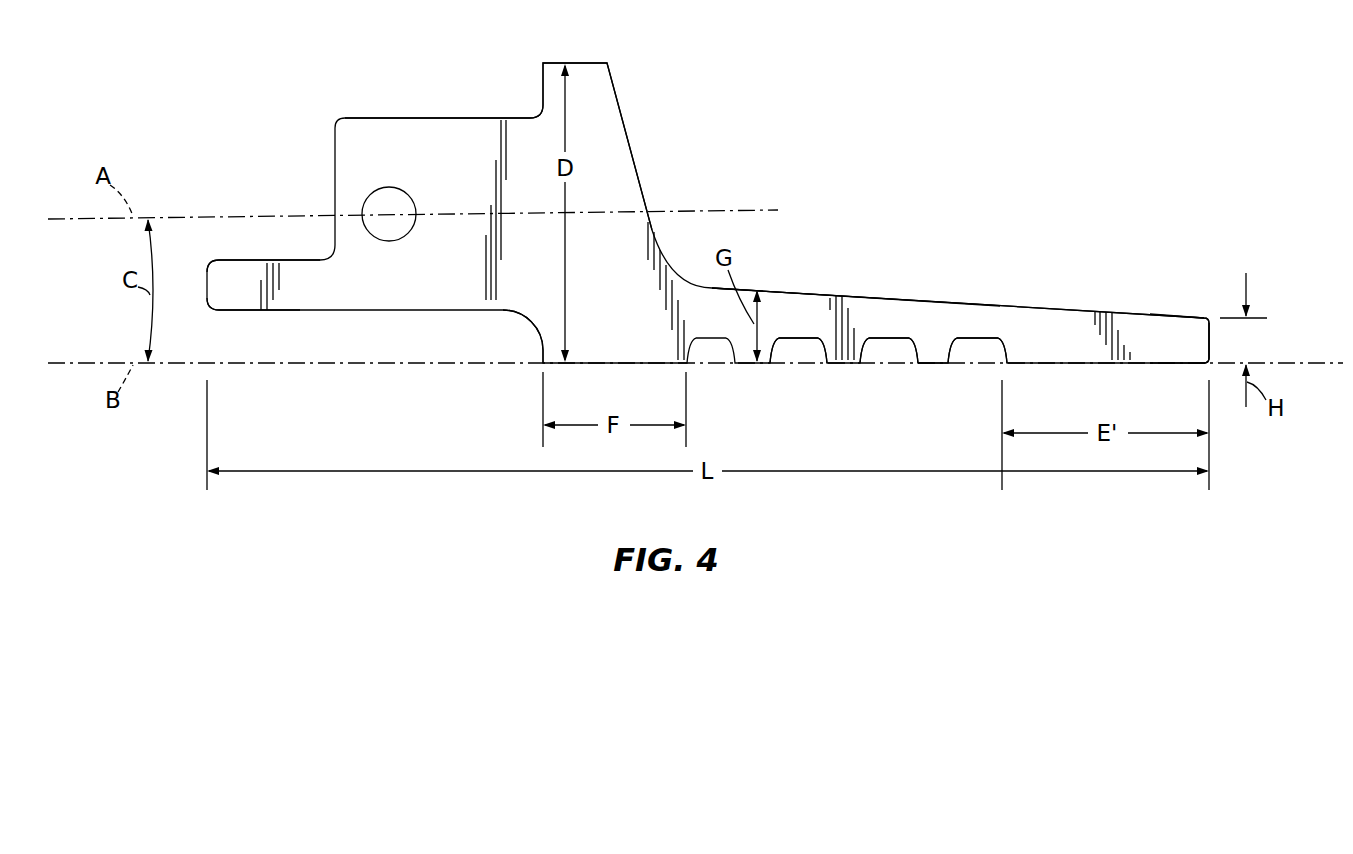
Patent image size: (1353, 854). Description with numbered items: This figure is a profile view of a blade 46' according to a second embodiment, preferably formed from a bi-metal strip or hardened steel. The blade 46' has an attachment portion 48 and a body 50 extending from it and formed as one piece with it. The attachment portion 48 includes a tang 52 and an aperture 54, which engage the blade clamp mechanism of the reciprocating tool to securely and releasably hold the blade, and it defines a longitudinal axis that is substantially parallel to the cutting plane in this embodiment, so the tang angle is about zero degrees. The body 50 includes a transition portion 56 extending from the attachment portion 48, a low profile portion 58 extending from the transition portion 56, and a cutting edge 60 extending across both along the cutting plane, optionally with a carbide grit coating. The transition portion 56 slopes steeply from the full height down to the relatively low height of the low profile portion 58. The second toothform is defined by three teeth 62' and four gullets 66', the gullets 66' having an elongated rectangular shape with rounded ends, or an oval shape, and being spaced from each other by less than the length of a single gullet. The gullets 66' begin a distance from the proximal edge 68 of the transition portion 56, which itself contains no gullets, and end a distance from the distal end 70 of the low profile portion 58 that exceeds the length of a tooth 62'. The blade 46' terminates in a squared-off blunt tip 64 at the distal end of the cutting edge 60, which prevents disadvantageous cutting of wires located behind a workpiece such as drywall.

The blade 46' is at (708, 213).
The attachment portion 48 is at (433, 118).
The body 50 is at (908, 296).
The tang 52 is at (243, 275).
The aperture 54 is at (385, 202).
The transition portion 56 is at (602, 97).
The low profile portion 58 is at (853, 300).
The cutting edge 60 is at (928, 353).
The teeth 62' is at (835, 385).
The blunt tip 64 is at (1176, 340).
The gullets 66' is at (972, 385).
The proximal edge 68 is at (542, 349).
The distal end 70 is at (1209, 345).